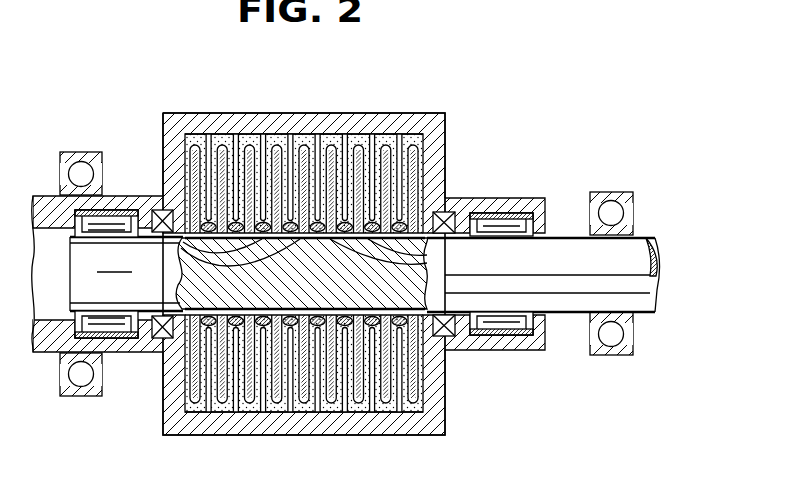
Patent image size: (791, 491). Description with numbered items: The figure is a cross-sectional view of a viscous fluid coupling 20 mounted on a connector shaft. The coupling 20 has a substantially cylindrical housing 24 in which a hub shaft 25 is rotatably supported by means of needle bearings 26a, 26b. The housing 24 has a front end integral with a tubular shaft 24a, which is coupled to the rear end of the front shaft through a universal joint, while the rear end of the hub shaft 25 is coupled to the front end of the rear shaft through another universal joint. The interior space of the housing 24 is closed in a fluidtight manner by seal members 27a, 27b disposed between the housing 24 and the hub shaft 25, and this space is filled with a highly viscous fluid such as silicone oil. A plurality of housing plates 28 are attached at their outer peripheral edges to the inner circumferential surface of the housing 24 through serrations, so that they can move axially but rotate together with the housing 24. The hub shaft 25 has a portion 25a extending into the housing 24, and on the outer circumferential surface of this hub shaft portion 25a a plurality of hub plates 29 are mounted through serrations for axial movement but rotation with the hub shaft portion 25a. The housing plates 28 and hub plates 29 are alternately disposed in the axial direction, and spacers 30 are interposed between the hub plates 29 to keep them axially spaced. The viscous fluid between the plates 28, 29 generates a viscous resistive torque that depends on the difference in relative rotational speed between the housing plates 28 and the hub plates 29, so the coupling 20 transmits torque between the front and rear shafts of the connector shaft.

The viscous fluid coupling 20 is at (458, 112).
The housing 24 is at (180, 128).
The tubular shaft 24a is at (127, 206).
The hub shaft 25 is at (646, 258).
The hub shaft portion 25a is at (460, 320).
The needle bearing 26a is at (121, 340).
The needle bearing 26b is at (512, 226).
The seal member 27a is at (161, 345).
The seal member 27b is at (448, 220).
The housing plates 28 is at (268, 400).
The hub plates 29 is at (236, 140).
The spacers 30 is at (180, 254).